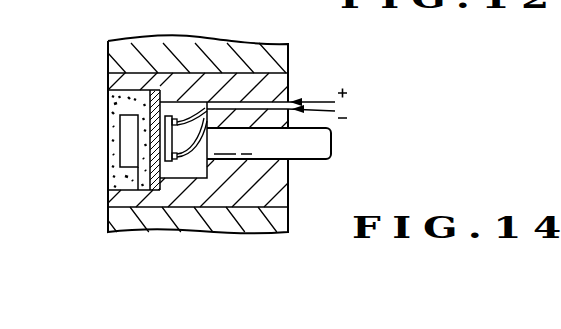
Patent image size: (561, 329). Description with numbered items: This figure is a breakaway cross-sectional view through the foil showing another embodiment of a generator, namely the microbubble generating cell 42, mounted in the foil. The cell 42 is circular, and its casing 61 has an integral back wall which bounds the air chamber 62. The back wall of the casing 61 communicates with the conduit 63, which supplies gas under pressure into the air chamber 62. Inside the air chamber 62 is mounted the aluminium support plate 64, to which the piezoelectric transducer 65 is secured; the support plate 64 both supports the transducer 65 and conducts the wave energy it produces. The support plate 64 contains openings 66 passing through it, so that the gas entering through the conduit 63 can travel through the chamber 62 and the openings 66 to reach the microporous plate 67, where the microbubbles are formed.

The microbubble generating cell 42 is at (96, 71).
The casing 61 is at (284, 86).
The air chamber 62 is at (205, 170).
The conduit 63 is at (348, 148).
The aluminium support plate 64 is at (148, 142).
The piezoelectric transducer 65 is at (168, 114).
The openings 66 is at (151, 111).
The microporous plate 67 is at (110, 105).